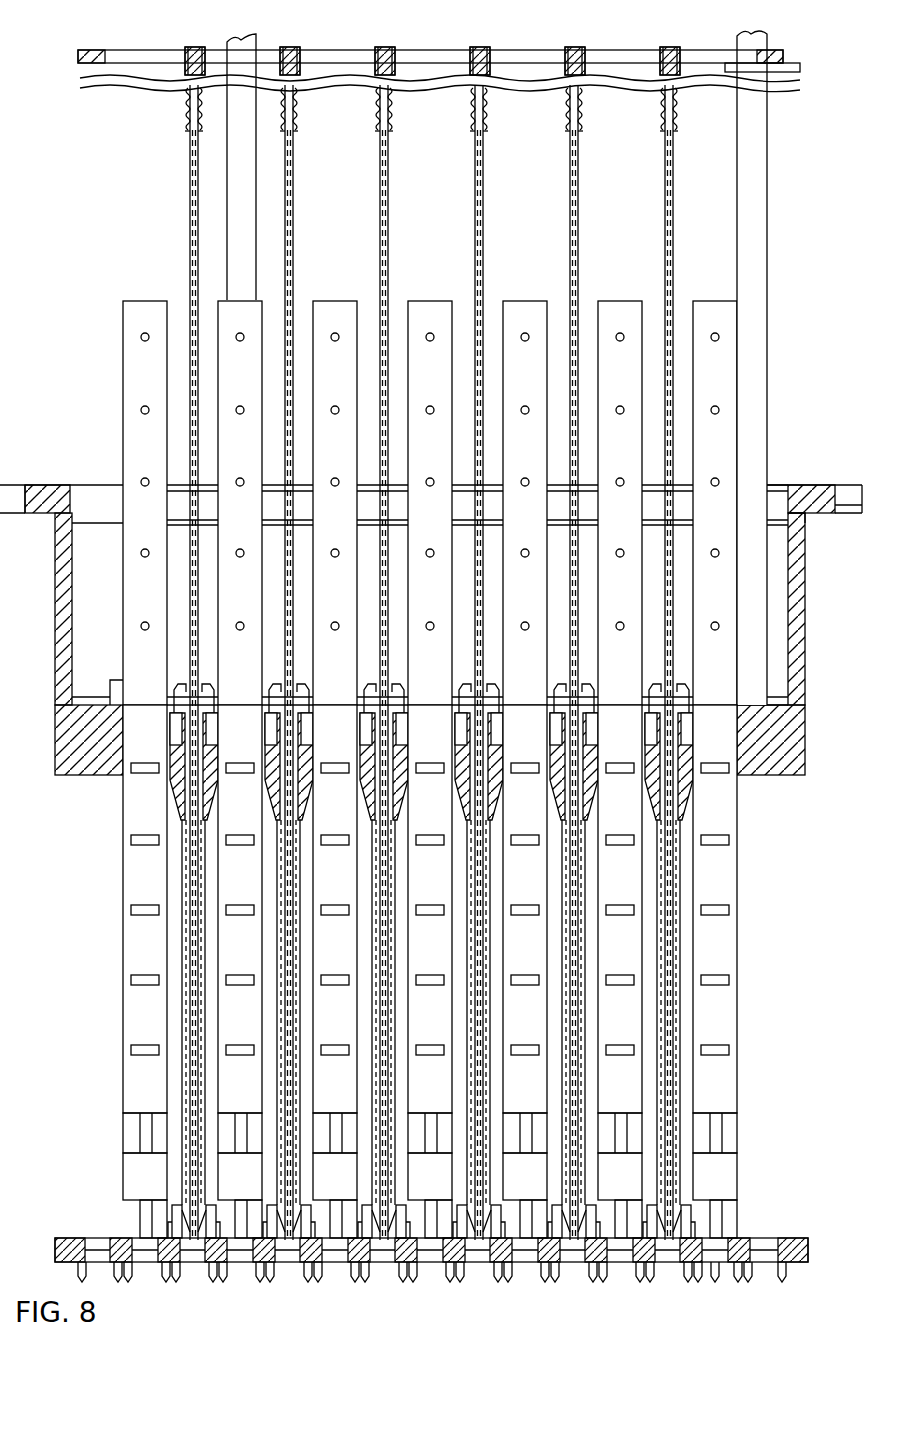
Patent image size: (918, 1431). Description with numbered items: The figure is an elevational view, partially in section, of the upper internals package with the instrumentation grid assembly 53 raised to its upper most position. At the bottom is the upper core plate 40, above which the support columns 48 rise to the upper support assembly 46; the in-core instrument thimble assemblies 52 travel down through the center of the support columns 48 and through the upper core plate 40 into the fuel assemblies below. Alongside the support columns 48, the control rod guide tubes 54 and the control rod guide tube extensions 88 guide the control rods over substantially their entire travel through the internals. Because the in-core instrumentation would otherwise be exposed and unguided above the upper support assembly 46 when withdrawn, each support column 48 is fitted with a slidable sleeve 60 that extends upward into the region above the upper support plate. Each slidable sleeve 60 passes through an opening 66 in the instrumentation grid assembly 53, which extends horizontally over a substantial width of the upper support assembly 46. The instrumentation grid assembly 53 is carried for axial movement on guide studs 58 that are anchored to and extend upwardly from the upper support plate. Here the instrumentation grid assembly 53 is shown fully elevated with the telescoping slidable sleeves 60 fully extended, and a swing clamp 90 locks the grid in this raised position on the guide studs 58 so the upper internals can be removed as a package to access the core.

The upper core plate 40 is at (794, 1236).
The upper support assembly 46 is at (78, 774).
The support column 48 is at (202, 1040).
The in-core instrument thimble assembly 52 is at (218, 1236).
The instrumentation grid assembly 53 is at (760, 58).
The control rod guide tube 54 is at (430, 971).
The guide stud 58 is at (256, 167).
The slidable sleeve 60 is at (190, 214).
The opening 66 is at (184, 52).
The control rod guide tube extension 88 is at (738, 300).
The swing clamp 90 is at (790, 80).